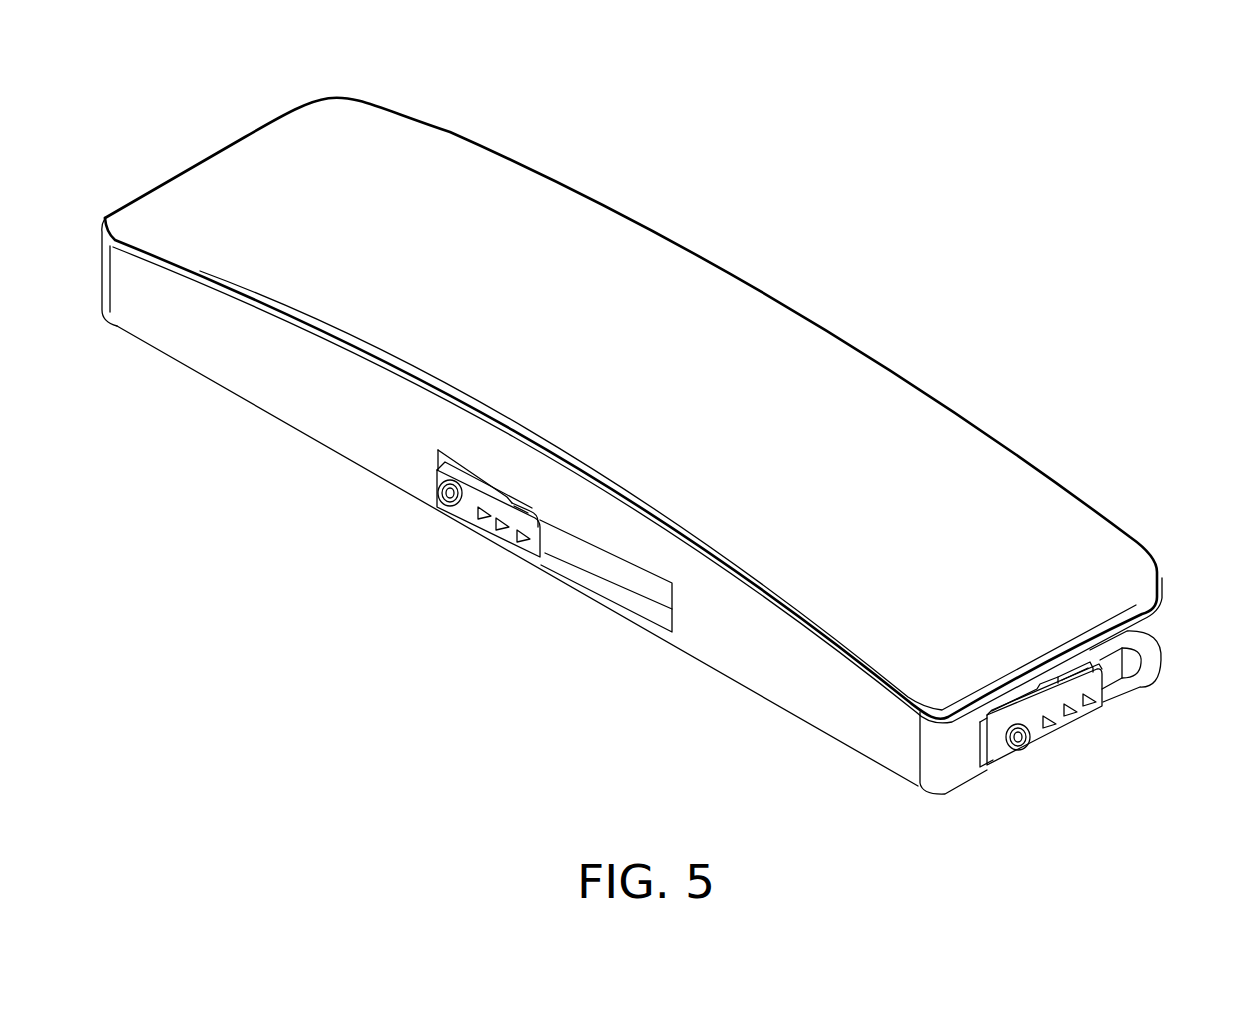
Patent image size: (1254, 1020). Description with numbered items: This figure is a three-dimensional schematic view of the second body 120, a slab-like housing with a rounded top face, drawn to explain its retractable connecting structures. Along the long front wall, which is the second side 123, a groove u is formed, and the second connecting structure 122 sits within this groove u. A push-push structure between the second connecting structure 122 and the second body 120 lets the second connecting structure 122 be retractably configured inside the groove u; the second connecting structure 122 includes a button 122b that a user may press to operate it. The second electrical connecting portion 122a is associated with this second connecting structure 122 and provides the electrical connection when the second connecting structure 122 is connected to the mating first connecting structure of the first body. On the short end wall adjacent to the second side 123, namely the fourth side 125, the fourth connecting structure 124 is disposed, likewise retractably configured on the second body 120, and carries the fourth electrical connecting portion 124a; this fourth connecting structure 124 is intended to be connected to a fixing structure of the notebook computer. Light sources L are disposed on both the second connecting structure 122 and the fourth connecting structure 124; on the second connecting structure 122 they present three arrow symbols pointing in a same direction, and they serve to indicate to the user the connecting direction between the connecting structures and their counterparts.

The second body 120 is at (350, 98).
The second connecting structure 122 is at (470, 512).
The second electrical connecting portion 122a is at (542, 524).
The button 122b is at (436, 502).
The light sources L is at (500, 525).
The groove u is at (605, 588).
The second side 123 is at (713, 694).
The fourth connecting structure 124 is at (1080, 712).
The fourth electrical connecting portion 124a is at (1073, 678).
The fourth side 125 is at (1162, 694).